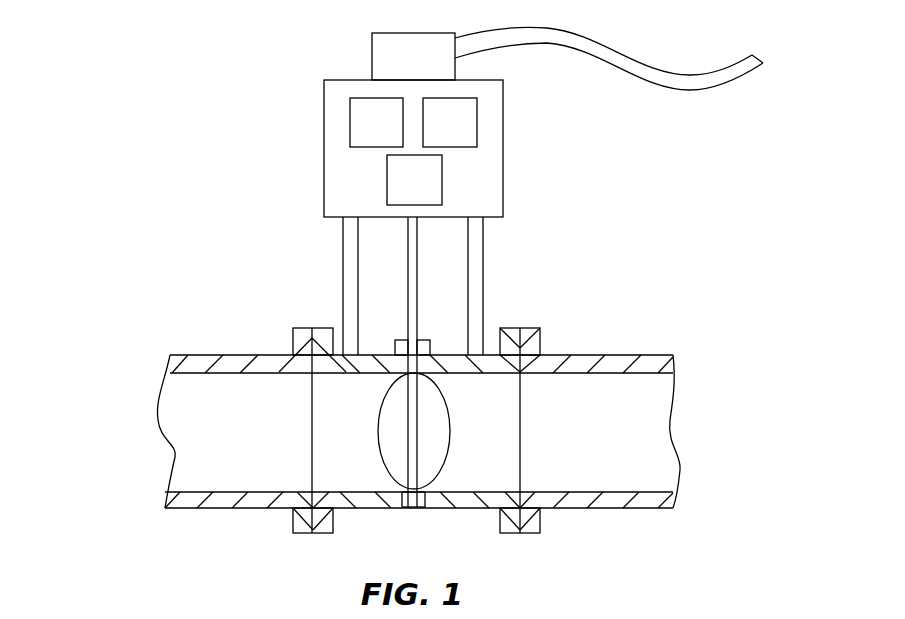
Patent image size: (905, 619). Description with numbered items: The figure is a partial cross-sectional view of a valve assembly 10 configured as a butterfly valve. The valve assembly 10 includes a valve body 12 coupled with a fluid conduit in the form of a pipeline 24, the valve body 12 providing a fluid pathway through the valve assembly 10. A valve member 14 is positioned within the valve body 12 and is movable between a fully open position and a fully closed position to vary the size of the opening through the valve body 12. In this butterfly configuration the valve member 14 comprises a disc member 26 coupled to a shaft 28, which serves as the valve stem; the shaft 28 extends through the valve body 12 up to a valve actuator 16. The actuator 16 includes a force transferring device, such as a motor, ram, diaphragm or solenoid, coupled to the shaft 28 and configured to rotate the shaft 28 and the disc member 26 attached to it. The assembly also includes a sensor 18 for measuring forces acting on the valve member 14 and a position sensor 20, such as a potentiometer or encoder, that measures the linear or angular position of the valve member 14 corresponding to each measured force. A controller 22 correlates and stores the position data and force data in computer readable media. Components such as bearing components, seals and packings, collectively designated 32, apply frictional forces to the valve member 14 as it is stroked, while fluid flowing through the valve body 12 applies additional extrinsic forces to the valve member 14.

The valve assembly 10 is at (150, 174).
The valve body 12 is at (490, 367).
The valve member 14 is at (372, 416).
The valve actuator 16 is at (400, 192).
The sensor 18 is at (435, 133).
The position sensor 20 is at (361, 133).
The controller 22 is at (428, 73).
The pipeline 24 is at (226, 362).
The disc member 26 is at (437, 442).
The shaft 28 is at (415, 295).
The bearing components, seals and packings 32 is at (404, 340).